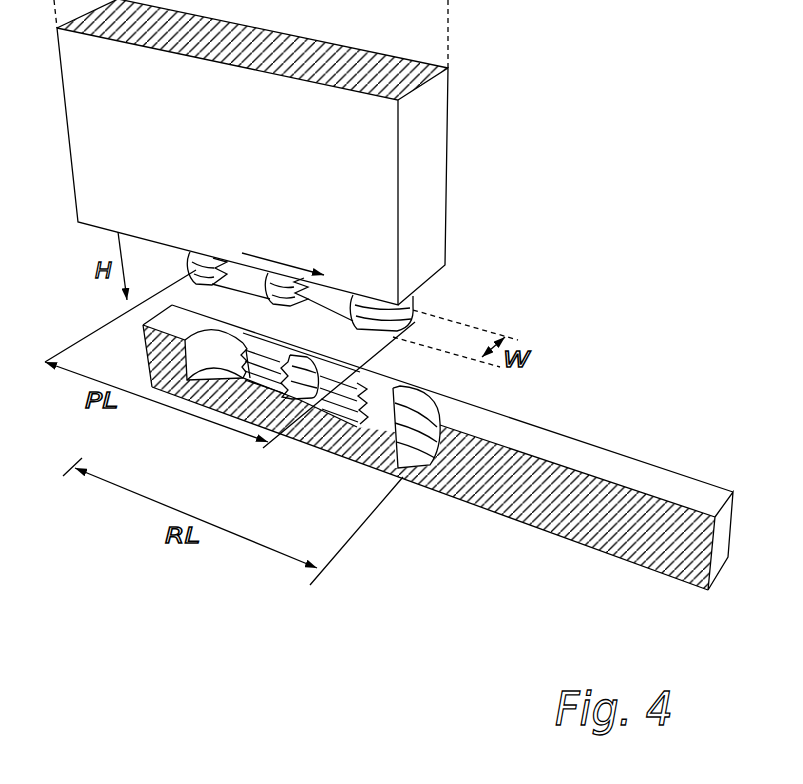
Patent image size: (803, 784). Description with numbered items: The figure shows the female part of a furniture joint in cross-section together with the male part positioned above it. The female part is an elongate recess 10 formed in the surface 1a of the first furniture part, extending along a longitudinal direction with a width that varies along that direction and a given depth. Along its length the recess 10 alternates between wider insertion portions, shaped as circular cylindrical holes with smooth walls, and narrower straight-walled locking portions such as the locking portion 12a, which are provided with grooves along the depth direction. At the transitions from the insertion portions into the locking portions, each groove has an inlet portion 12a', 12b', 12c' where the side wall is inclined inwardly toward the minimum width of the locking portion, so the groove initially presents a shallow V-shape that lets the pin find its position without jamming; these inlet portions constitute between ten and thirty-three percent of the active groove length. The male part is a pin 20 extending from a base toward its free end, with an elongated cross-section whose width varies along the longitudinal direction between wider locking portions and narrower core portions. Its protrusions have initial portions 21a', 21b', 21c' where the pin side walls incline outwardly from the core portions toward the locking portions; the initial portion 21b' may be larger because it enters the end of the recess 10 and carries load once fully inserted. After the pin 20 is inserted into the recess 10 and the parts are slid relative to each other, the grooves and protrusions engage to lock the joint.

The pin 20 is at (412, 318).
The recess 10 is at (458, 405).
The surface 1a is at (568, 455).
The initial portion 21a' is at (211, 271).
The initial portion 21b' is at (384, 317).
The initial portion 21c' is at (296, 262).
The locking portion 12a is at (238, 476).
The inlet portion 12a' is at (236, 422).
The inlet portion 12b' is at (398, 484).
The inlet portion 12c' is at (319, 453).